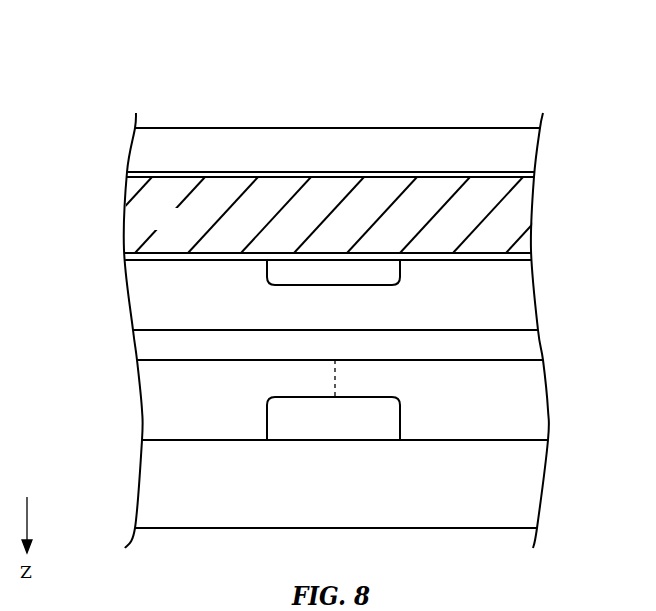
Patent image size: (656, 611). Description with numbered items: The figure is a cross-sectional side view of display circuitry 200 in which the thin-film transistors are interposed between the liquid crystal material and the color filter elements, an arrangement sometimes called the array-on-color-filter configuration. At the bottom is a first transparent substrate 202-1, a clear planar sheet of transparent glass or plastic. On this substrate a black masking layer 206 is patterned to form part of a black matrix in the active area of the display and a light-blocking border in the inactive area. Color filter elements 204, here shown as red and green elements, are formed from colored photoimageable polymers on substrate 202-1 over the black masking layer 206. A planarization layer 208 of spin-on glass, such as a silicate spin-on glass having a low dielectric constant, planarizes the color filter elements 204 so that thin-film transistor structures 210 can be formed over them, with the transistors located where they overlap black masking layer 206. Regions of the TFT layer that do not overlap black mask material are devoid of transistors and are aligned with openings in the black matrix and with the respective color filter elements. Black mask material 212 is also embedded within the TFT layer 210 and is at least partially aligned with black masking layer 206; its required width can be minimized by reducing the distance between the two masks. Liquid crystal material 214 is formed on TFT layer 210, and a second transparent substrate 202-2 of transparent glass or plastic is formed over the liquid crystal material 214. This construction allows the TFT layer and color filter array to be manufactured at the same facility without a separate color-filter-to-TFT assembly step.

The display circuitry 200 is at (523, 66).
The second transparent substrate 202-2 is at (528, 147).
The liquid crystal material 214 is at (558, 176).
The thin-film transistor structures 210 is at (113, 260).
The black mask material 212 is at (385, 273).
The planarization layer 208 is at (530, 343).
The color filter elements 204 is at (558, 360).
The black masking layer 206 is at (383, 430).
The first transparent substrate 202-1 is at (533, 482).